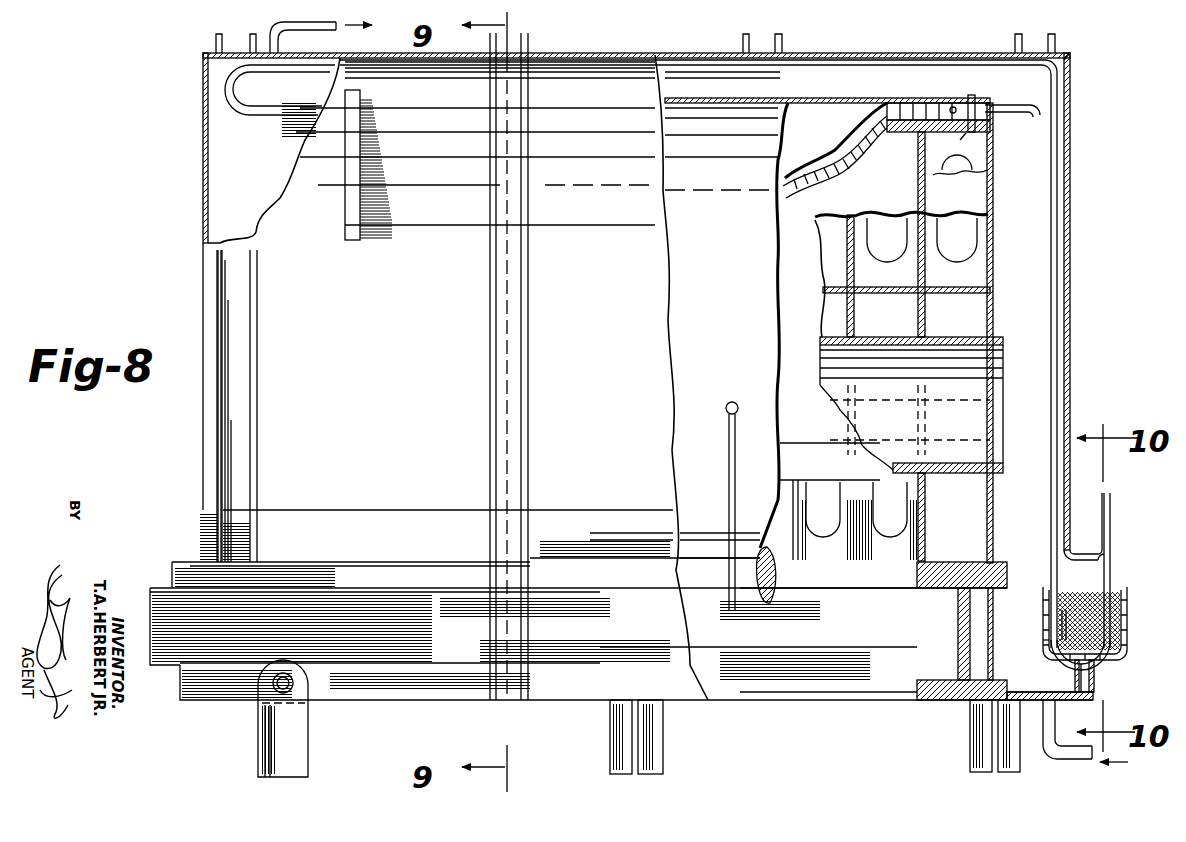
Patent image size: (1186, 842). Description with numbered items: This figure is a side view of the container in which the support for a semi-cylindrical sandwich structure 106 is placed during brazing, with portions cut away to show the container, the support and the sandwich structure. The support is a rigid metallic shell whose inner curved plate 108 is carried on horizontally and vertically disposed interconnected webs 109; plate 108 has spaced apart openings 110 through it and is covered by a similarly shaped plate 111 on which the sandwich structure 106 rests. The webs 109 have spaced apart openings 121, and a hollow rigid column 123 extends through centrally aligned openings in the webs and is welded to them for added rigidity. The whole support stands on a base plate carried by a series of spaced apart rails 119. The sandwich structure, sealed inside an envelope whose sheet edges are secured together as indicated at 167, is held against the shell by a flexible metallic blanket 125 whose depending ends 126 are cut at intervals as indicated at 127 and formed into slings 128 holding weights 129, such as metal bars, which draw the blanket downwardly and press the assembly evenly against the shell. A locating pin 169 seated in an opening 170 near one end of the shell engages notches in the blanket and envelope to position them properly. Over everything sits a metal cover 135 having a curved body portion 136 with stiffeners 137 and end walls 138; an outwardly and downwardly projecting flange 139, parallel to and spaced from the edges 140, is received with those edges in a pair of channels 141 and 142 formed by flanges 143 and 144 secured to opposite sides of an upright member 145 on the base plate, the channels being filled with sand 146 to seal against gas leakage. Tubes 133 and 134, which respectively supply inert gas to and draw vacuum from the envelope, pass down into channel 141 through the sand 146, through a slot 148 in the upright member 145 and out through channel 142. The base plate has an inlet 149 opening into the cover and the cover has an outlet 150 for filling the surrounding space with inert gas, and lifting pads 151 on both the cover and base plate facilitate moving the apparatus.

The sandwich structure 106 is at (900, 103).
The inner curved plate 108 is at (990, 128).
The webs 109 is at (888, 293).
The openings 110 is at (905, 133).
The plate 111 is at (975, 171).
The rails 119 is at (268, 716).
The openings 121 is at (962, 242).
The hollow rigid column 123 is at (895, 344).
The flexible metallic blanket 125 is at (832, 100).
The depending ends 126 is at (762, 498).
The cuts 127 is at (735, 612).
The slings 128 is at (778, 600).
The weights 129 is at (768, 606).
The tube 133 is at (1005, 106).
The tube 134 is at (244, 70).
The metal cover 135 is at (1070, 55).
The curved body portion 136 is at (900, 56).
The stiffeners 137 is at (526, 36).
The end walls 138 is at (1070, 70).
The flange 139 is at (175, 564).
The edges 140 is at (1062, 608).
The channel 141 is at (1066, 658).
The channel 142 is at (1100, 666).
The flange 143 is at (1046, 654).
The flange 144 is at (150, 606).
The upright member 145 is at (1116, 608).
The sand 146 is at (1112, 590).
The slot 148 is at (1112, 642).
The inlet 149 is at (1092, 766).
The outlet 150 is at (331, 31).
The lifting pads 151 is at (345, 202).
The secured edges 167 is at (950, 132).
The locating pin 169 is at (970, 96).
The opening 170 is at (972, 133).